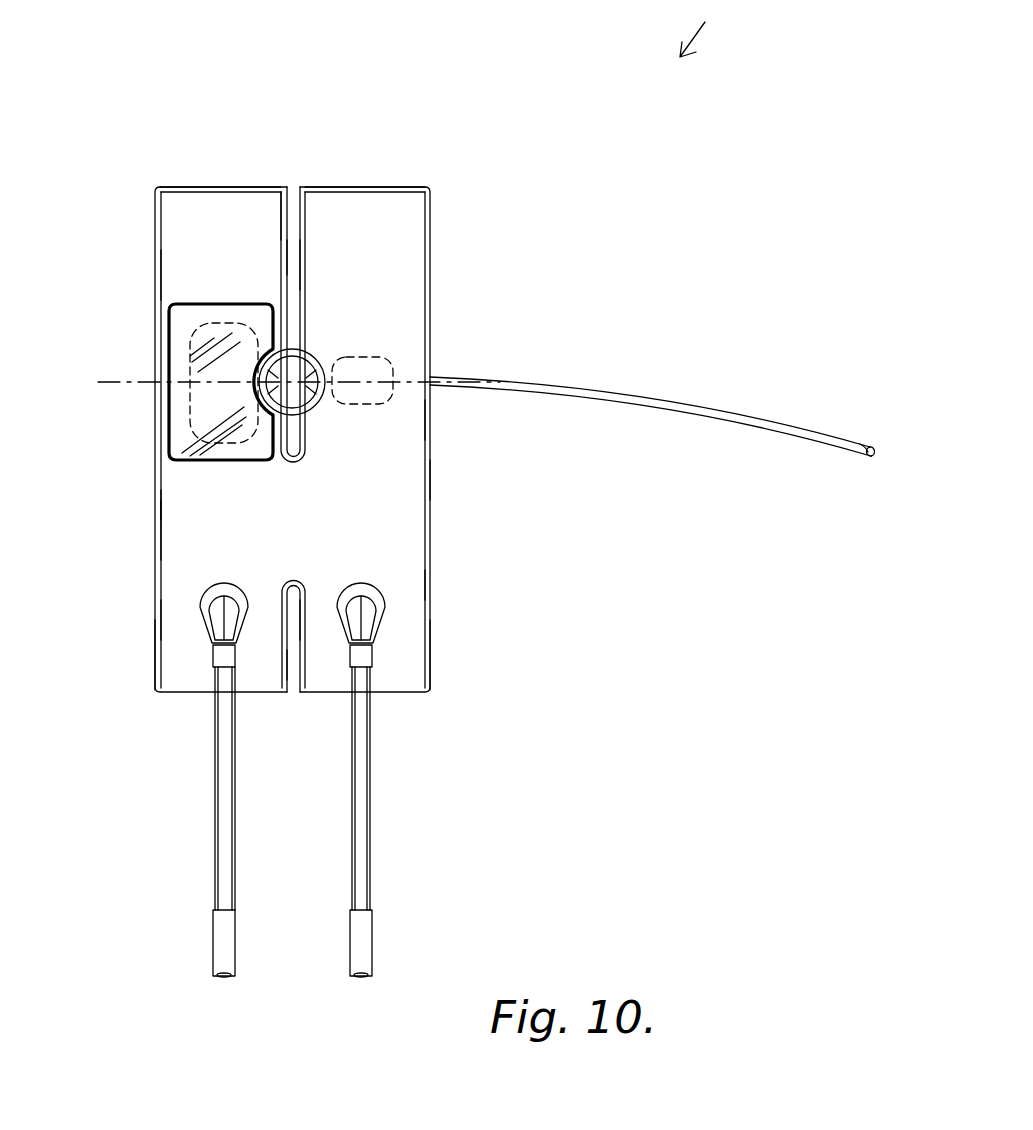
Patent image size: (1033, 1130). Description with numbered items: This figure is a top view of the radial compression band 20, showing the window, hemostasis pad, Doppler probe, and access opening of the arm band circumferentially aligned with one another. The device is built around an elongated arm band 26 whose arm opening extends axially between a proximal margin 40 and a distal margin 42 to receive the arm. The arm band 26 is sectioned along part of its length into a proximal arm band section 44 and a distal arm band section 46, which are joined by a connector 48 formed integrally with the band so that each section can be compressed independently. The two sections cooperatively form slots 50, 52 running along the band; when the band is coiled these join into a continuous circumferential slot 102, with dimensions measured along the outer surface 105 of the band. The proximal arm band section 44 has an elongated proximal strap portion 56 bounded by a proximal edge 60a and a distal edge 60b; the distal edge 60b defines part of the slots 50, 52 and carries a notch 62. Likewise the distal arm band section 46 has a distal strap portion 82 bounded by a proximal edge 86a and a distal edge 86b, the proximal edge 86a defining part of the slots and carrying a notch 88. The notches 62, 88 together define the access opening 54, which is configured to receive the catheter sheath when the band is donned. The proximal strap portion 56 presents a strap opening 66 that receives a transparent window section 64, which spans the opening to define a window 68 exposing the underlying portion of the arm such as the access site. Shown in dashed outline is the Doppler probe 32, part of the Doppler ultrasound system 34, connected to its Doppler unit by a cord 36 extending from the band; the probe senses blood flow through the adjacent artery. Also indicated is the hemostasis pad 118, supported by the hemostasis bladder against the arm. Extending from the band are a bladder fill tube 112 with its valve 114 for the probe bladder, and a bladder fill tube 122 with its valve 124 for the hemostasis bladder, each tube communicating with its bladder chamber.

The radial compression band 20 is at (716, 35).
The arm band 26 is at (420, 520).
The Doppler probe 32 is at (390, 362).
The Doppler ultrasound system 34 is at (797, 432).
The cord 36 is at (728, 413).
The proximal margin 40 is at (155, 648).
The distal margin 42 is at (430, 642).
The proximal arm band section 44 is at (203, 195).
The distal arm band section 46 is at (383, 195).
The connector 48 is at (290, 522).
The slot 50 is at (295, 682).
The slot 52 is at (296, 200).
The access opening 54 is at (312, 357).
The proximal strap portion 56 is at (195, 500).
The proximal edge 60a is at (155, 620).
The distal edge 60b is at (288, 258).
The notch 62 is at (286, 370).
The window section 64 is at (180, 413).
The strap opening 66 is at (173, 352).
The window 68 is at (167, 303).
The distal strap portion 82 is at (405, 582).
The proximal edge 86a is at (293, 277).
The distal edge 86b is at (430, 477).
The notch 88 is at (317, 405).
The continuous circumferential slot 102 is at (287, 222).
The outer surface 105 is at (410, 426).
The bladder fill tube 112 is at (366, 772).
The valve 114 is at (365, 940).
The hemostasis pad 118 is at (185, 295).
The bladder fill tube 122 is at (220, 818).
The valve 124 is at (223, 945).